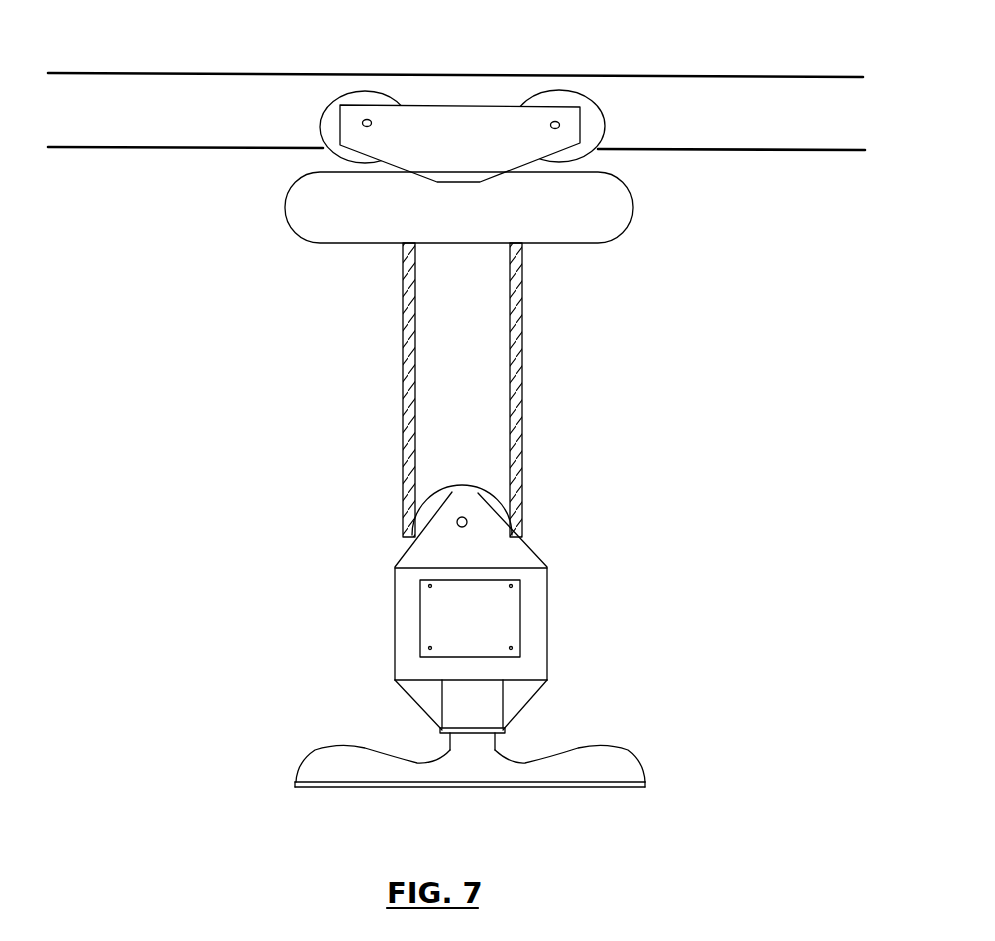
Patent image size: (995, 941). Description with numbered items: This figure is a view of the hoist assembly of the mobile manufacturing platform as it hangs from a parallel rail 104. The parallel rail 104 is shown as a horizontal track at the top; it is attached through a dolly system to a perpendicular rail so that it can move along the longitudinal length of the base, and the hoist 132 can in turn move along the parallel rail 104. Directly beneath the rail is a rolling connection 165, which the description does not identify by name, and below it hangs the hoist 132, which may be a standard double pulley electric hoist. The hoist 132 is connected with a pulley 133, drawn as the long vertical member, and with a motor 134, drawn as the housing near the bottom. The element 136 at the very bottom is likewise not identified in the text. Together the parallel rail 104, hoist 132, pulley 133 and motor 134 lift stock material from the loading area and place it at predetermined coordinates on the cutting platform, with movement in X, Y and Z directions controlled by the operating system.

The parallel rail 104 is at (717, 83).
The trolley with rollers 165 is at (310, 159).
The hoist 132 is at (643, 215).
The pulley 133 is at (527, 415).
The motor 134 is at (558, 620).
The base plate 136 is at (652, 768).